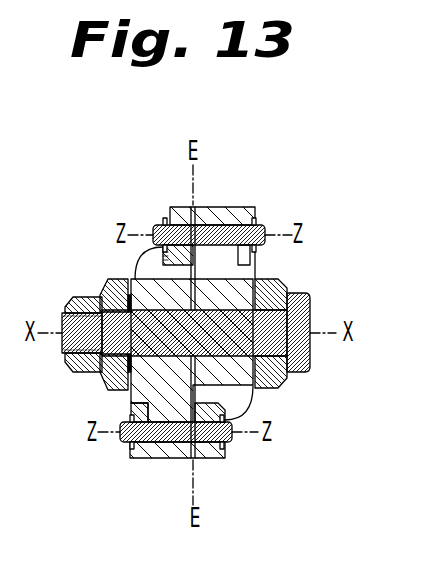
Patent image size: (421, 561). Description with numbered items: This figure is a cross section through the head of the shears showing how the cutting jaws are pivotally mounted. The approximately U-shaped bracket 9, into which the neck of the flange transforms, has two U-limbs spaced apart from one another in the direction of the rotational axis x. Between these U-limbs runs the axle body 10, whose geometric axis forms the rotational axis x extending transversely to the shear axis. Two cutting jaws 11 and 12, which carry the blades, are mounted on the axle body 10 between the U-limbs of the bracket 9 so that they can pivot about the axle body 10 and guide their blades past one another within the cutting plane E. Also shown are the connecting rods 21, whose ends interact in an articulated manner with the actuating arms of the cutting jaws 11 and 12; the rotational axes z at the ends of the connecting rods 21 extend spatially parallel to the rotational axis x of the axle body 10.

The bracket 9 is at (273, 292).
The axle body 10 is at (278, 342).
The cutting jaw 11 is at (210, 285).
The cutting jaw 12 is at (133, 390).
The connecting rod 21 is at (173, 209).